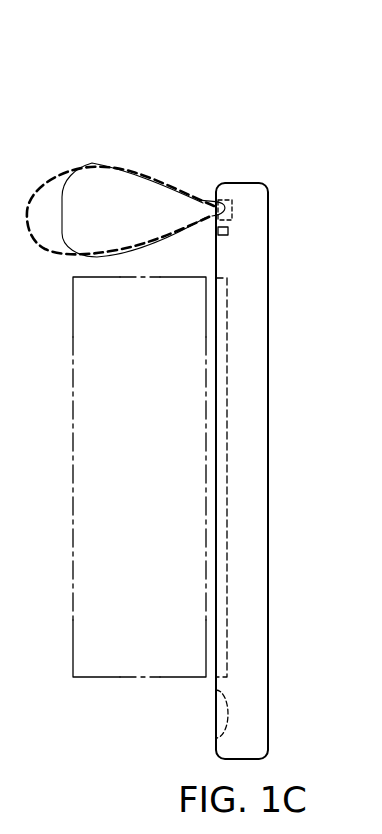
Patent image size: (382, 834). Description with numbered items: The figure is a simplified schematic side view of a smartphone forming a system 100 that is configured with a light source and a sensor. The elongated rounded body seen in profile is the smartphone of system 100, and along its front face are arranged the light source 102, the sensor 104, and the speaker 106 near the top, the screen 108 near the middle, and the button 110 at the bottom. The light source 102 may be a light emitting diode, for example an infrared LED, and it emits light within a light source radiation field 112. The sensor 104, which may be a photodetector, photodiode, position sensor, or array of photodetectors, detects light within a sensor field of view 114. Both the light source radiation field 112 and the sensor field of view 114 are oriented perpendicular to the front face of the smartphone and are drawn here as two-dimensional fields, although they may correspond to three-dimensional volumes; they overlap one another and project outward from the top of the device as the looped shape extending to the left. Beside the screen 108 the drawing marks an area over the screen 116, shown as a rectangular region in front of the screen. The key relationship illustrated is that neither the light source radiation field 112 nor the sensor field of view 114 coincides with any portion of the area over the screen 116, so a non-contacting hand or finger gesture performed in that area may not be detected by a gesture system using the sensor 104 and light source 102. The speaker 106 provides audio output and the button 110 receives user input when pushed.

The system 100 is at (80, 88).
The light source 102 is at (200, 198).
The sensor 104 is at (232, 204).
The speaker 106 is at (228, 233).
The screen 108 is at (227, 468).
The button 110 is at (228, 713).
The light source radiation field 112 is at (40, 243).
The sensor field of view 114 is at (123, 168).
The area over screen 116 is at (97, 677).